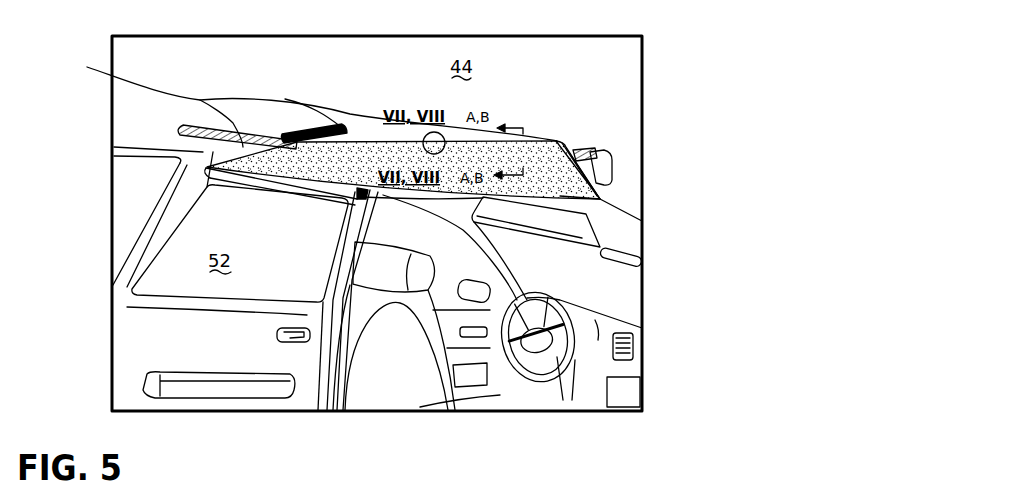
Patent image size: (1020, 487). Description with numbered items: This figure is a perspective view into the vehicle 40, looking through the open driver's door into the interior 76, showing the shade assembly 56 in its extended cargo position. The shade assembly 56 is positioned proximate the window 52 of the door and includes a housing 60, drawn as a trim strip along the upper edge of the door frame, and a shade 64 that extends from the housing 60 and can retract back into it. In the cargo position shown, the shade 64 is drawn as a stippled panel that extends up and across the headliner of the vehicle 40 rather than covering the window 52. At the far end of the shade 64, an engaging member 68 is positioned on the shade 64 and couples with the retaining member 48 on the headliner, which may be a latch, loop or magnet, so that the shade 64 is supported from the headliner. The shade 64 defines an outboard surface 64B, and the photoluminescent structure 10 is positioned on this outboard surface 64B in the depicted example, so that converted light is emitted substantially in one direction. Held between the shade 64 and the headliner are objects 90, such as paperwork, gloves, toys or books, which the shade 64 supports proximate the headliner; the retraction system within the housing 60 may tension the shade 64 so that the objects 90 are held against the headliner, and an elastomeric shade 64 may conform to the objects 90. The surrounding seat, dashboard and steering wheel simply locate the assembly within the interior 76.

The photoluminescent structure 10 is at (553, 161).
The vehicle 40 is at (627, 59).
The retaining member 48 is at (594, 152).
The window 52 is at (230, 227).
The shade assembly 56 is at (216, 152).
The housing 60 is at (235, 172).
The shade 64 is at (536, 146).
The outboard surface 64B is at (583, 201).
The engaging member 68 is at (605, 177).
The interior 76 is at (180, 333).
The objects 90 is at (310, 102).